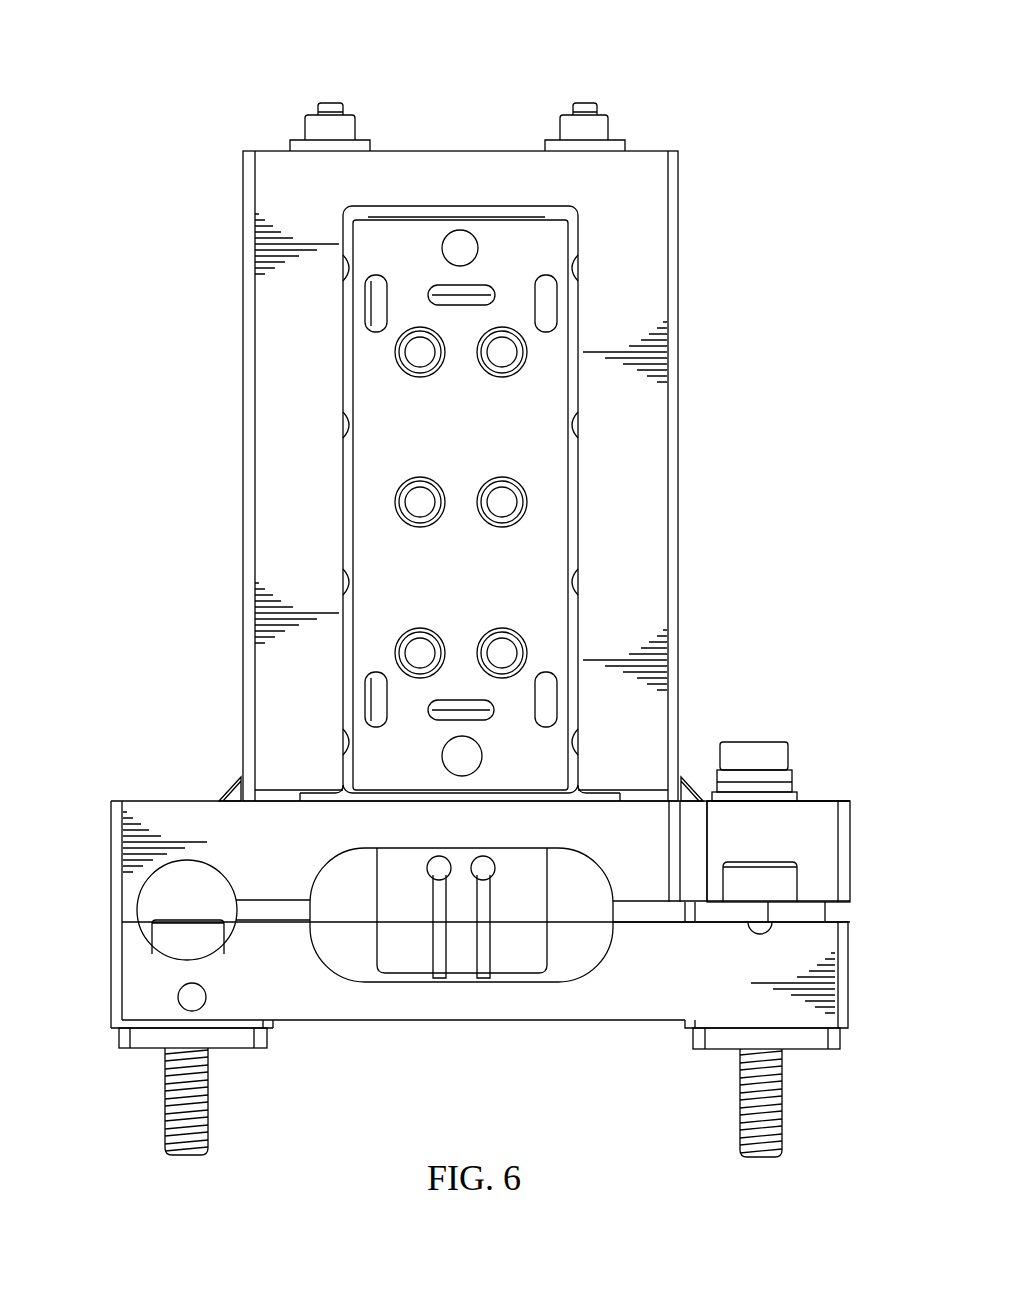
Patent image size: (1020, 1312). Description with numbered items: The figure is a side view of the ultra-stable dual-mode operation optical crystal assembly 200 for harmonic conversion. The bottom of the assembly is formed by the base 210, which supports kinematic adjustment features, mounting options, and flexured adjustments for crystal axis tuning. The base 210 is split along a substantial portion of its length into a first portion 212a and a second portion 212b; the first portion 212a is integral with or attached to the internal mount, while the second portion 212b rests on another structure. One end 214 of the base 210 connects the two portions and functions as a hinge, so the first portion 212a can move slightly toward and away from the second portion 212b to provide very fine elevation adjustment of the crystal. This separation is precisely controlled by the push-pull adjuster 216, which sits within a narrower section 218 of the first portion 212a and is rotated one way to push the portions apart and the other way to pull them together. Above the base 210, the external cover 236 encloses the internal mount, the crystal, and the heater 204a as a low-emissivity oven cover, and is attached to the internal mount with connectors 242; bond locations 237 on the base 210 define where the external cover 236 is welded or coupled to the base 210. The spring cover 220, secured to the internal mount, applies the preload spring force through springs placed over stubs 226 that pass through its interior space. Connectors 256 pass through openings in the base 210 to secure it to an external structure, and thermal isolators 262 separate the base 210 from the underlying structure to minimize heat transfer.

The optical crystal assembly 200 is at (250, 70).
The heater 204a is at (405, 985).
The base 210 is at (93, 835).
The first portion 212a is at (850, 850).
The second portion 212b is at (848, 975).
The end 214 is at (128, 912).
The push-pull adjuster 216 is at (757, 742).
The narrower section 218 is at (823, 798).
The spring cover 220 is at (345, 365).
The stubs 226 is at (402, 518).
The external cover 236 is at (683, 262).
The bond locations 237 is at (227, 781).
The connectors 242 is at (612, 125).
The connectors 256 is at (188, 1157).
The thermal isolators 262 is at (118, 1036).